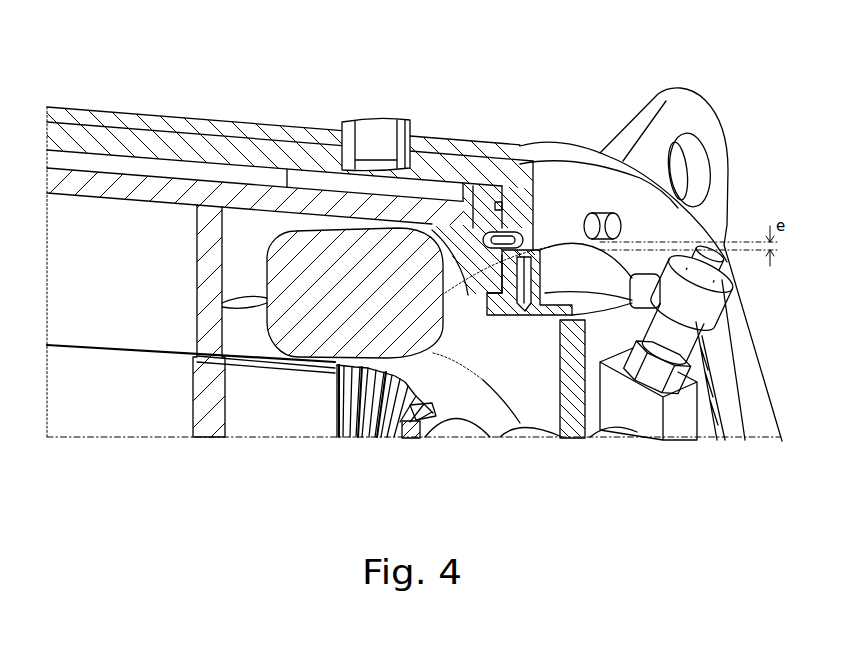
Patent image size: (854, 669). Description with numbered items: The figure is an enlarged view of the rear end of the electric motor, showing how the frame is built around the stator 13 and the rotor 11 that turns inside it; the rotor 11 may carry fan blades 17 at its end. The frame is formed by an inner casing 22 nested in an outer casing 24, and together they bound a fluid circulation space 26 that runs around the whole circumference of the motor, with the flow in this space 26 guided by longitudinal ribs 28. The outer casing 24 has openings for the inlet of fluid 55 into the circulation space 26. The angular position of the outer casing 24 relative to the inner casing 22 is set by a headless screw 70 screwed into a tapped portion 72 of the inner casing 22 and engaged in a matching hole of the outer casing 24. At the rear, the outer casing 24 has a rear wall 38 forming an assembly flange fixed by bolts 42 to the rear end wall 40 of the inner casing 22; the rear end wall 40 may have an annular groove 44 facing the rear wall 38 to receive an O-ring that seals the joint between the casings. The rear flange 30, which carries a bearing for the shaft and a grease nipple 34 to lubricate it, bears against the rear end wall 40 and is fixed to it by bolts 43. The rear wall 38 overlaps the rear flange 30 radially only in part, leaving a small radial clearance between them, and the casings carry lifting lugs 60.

The rotor 11 is at (155, 417).
The stator 13 is at (130, 325).
The fan blades 17 is at (298, 415).
The inner casing 22 is at (97, 152).
The outer casing 24 is at (250, 152).
The fluid circulation space 26 is at (443, 190).
The longitudinal ribs 28 is at (173, 143).
The rear flange 30 is at (707, 392).
The grease nipple 34 is at (738, 288).
The rear wall of the outer casing 38 is at (583, 150).
The rear end wall of the inner casing 40 is at (453, 230).
The bolts 42 is at (620, 220).
The bolts 43 is at (722, 325).
The annular groove 44 is at (518, 205).
The openings for the inlet of fluid 55 is at (380, 135).
The lifting lugs 60 is at (698, 112).
The headless screw 70 is at (580, 190).
The tapped portion 72 is at (490, 233).